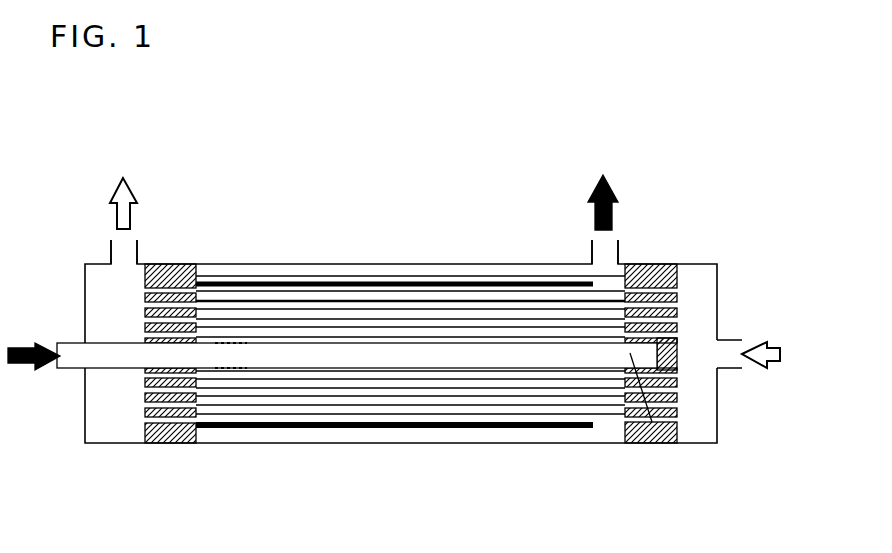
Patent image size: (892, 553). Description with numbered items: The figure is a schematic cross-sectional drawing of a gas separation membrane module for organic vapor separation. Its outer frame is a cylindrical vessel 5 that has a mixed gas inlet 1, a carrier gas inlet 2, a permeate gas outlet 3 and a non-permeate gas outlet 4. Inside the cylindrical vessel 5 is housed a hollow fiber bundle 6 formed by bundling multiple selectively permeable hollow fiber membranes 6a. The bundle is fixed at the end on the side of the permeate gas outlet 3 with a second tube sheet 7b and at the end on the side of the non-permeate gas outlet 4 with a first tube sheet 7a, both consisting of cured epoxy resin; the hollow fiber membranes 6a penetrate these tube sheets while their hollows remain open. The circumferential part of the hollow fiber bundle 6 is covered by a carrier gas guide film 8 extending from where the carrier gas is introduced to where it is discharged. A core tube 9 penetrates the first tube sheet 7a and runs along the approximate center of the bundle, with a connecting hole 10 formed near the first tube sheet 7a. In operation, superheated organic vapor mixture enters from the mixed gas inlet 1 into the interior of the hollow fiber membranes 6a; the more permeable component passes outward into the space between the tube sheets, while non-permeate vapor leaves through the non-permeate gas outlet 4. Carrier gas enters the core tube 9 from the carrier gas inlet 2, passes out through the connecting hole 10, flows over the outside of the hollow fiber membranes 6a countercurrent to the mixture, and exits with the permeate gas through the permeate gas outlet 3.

The mixed gas inlet 1 is at (748, 334).
The carrier gas inlet 2 is at (332, 337).
The permeate gas outlet 3 is at (586, 219).
The non-permeate gas outlet 4 is at (136, 221).
The cylindrical vessel 5 is at (323, 265).
The hollow fiber bundle 6 is at (592, 390).
The hollow fiber membrane 6a is at (617, 415).
The first tube sheet 7a is at (145, 445).
The second tube sheet 7b is at (640, 263).
The carrier gas guide film 8 is at (385, 432).
The core tube 9 is at (677, 390).
The connecting hole of core tube 10 is at (222, 367).